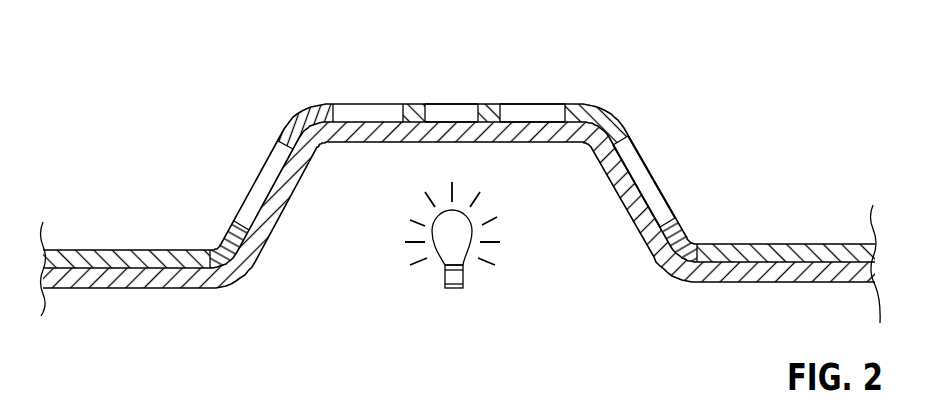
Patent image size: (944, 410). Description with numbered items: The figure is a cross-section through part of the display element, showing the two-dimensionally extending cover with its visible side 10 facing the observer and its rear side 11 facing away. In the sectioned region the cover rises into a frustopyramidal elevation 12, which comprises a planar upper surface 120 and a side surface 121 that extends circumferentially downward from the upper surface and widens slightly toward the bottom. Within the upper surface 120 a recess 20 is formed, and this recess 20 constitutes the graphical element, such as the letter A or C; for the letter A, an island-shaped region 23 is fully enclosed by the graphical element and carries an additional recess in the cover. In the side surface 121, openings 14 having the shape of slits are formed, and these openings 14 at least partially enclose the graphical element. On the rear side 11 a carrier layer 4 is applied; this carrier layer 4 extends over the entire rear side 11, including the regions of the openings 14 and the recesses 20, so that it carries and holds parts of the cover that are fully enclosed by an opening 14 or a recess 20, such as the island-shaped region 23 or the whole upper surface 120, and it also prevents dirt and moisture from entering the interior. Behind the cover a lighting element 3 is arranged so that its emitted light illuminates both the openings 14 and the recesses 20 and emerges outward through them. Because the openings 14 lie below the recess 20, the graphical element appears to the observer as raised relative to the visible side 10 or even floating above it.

The visible side 10 is at (130, 250).
The rear side 11 is at (150, 288).
The side surface 121 is at (232, 226).
The upper surface 120 is at (413, 104).
The island-shaped region 23 is at (424, 113).
The recess 20 is at (460, 115).
The elevation 12 is at (621, 109).
The opening 14 is at (663, 197).
The carrier layer 4 is at (657, 268).
The lighting element 3 is at (450, 248).